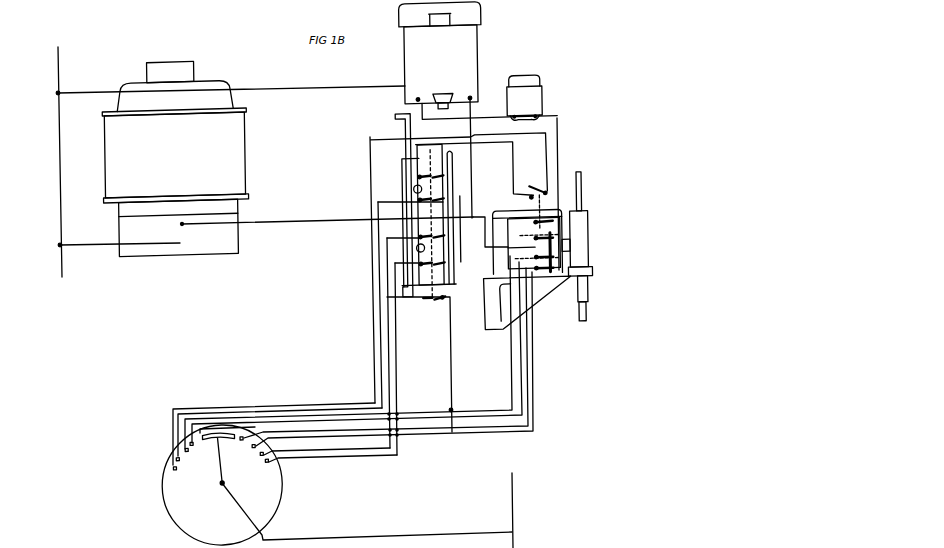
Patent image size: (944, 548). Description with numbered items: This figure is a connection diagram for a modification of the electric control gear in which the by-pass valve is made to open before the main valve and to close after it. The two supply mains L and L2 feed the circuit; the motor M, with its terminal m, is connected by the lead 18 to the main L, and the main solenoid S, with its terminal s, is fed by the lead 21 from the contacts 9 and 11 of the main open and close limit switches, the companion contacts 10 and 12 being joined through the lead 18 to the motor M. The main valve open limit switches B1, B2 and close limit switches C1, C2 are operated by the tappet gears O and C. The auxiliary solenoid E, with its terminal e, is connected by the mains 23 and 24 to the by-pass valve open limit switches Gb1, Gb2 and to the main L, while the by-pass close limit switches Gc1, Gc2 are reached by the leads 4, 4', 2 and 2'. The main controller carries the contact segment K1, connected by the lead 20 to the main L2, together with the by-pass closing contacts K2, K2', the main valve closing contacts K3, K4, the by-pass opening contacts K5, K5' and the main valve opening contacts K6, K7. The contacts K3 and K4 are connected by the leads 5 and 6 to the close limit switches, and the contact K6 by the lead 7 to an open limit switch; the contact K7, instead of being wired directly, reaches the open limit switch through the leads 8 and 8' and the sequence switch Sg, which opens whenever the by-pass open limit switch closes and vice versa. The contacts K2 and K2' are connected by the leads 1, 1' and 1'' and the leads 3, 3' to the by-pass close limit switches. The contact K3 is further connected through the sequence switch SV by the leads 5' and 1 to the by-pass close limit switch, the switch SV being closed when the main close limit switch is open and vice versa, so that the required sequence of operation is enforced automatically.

The supply main L is at (57, 161).
The supply main L2 is at (513, 511).
The motor M is at (176, 158).
The motor terminal m is at (182, 225).
The contact of close limit switch c1 11 is at (338, 88).
The lead 18 is at (100, 247).
The main solenoid S is at (441, 56).
The solenoid terminal s is at (419, 97).
The auxiliary solenoid E is at (543, 95).
The auxiliary solenoid terminal e is at (524, 124).
The main 24 is at (500, 118).
The main 23 is at (557, 157).
The lead 8' is at (508, 158).
The sequence switch Sg is at (535, 185).
The lead 4' is at (520, 209).
The by-pass valve open limit switch Gb1 is at (556, 222).
The by-pass valve open limit switch Gb2 is at (537, 238).
The lead 4 is at (516, 255).
The by-pass valve close limit switch Gc1 is at (562, 258).
The lead 2' is at (515, 267).
The by-pass valve close limit switch Gc2 is at (541, 272).
The lead 2 is at (540, 284).
The main valve open limit switch B1 is at (430, 169).
The main valve open limit switch B2 is at (431, 208).
The contact of open limit switch o1 9 is at (434, 175).
The contact of open limit switch o2 10 is at (434, 199).
The lead 21 is at (471, 198).
The tappet gear O is at (414, 189).
The tappet gear C is at (416, 248).
The main valve close limit switch C1 is at (431, 229).
The main valve close limit switch C2 is at (431, 272).
The contact of close limit switch c2 12 is at (445, 266).
The sequence switch SV is at (434, 305).
The lead 5 is at (406, 272).
The lead 5' is at (428, 346).
The lead 1 is at (404, 359).
The lead 1' is at (399, 353).
The lead 1'' is at (432, 447).
The lead 3 is at (348, 352).
The lead 3' is at (357, 352).
The lead 6 is at (349, 459).
The lead 7 is at (339, 408).
The lead 8 is at (274, 426).
The contact segment K1 is at (219, 432).
The by-pass closing contact K2 is at (257, 432).
The by-pass closing contact K2' is at (278, 434).
The main valve closing contact K3 is at (261, 457).
The main valve closing contact K4 is at (267, 465).
The by-pass opening contact K5 is at (203, 449).
The by-pass opening contact K5' is at (199, 459).
The main valve opening contact K6 is at (181, 460).
The main valve opening contact K7 is at (177, 470).
The lead 20 is at (442, 537).